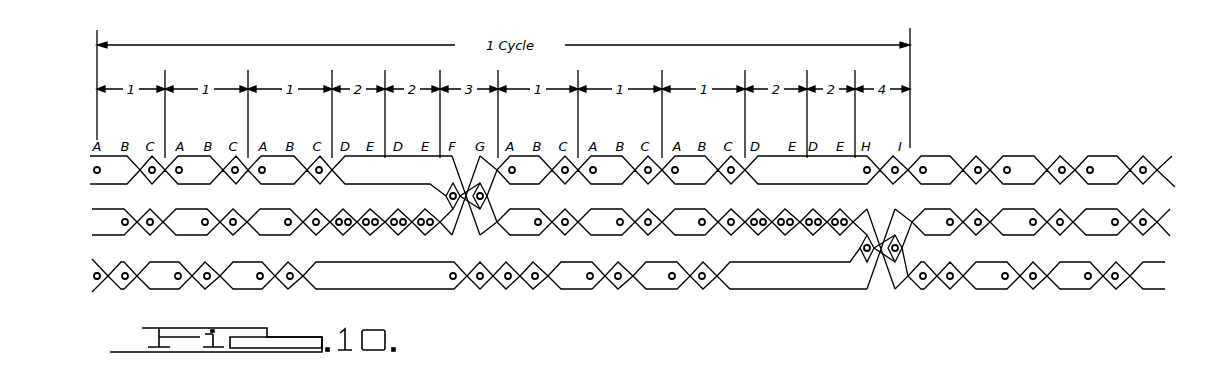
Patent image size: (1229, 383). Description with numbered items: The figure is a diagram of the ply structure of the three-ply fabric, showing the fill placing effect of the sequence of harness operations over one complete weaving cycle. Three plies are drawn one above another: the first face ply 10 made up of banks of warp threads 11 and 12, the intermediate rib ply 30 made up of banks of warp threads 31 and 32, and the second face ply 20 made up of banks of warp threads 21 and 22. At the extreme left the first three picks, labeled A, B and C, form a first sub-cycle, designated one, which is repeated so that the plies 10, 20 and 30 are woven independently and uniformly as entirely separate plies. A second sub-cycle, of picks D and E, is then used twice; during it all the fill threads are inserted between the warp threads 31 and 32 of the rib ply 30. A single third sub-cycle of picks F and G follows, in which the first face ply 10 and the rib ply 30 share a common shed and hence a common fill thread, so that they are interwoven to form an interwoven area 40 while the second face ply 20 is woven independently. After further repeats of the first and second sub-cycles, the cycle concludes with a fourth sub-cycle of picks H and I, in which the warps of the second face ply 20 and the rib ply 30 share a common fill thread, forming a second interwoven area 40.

The first face ply 10 is at (72, 150).
The warp threads 11 is at (105, 160).
The warp threads 12 is at (105, 180).
The second face ply 20 is at (72, 255).
The warp threads 21 is at (89, 262).
The warp threads 22 is at (89, 288).
The rib ply 30 is at (72, 204).
The warp threads 31 is at (104, 212).
The warp threads 32 is at (104, 232).
The interwoven area 40 is at (492, 184).